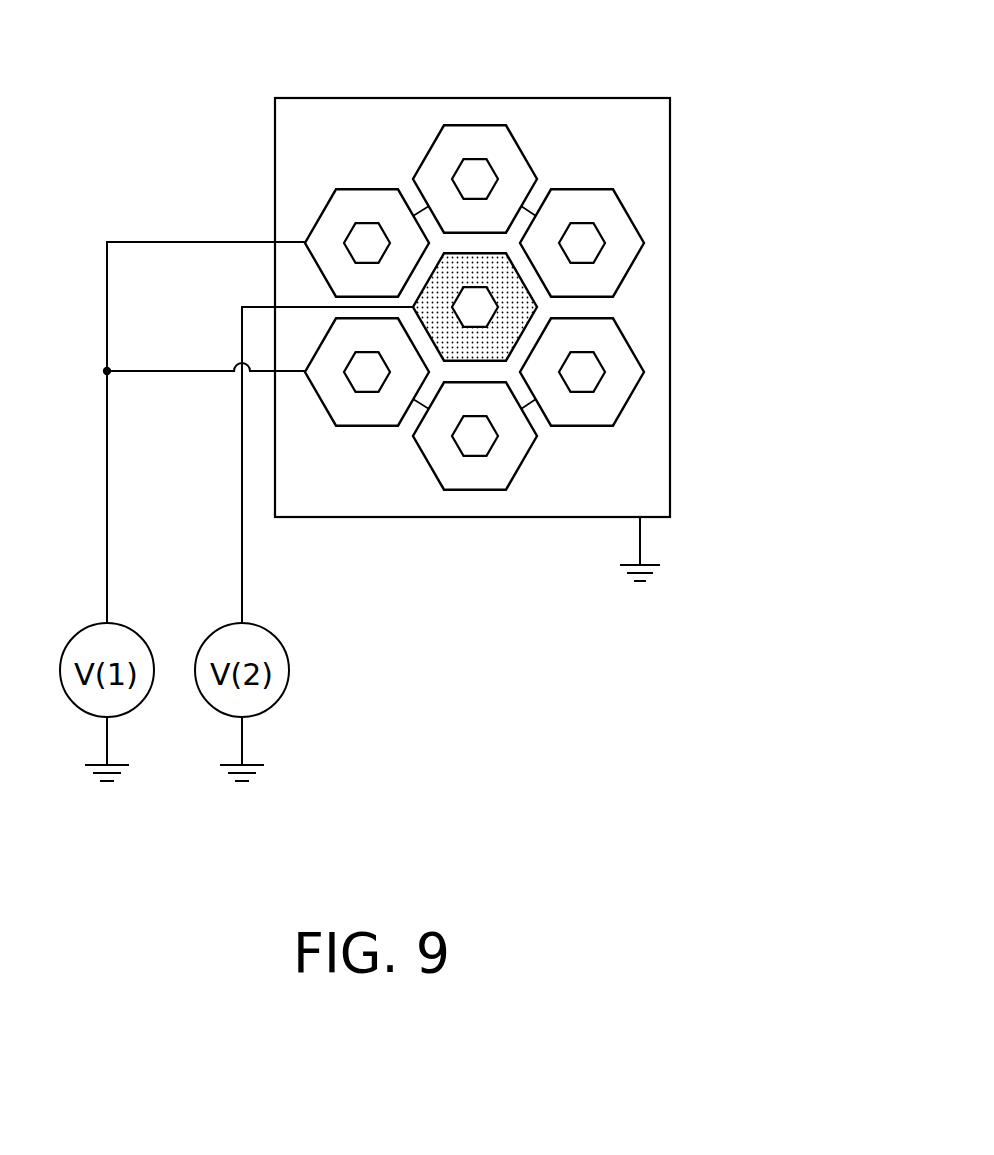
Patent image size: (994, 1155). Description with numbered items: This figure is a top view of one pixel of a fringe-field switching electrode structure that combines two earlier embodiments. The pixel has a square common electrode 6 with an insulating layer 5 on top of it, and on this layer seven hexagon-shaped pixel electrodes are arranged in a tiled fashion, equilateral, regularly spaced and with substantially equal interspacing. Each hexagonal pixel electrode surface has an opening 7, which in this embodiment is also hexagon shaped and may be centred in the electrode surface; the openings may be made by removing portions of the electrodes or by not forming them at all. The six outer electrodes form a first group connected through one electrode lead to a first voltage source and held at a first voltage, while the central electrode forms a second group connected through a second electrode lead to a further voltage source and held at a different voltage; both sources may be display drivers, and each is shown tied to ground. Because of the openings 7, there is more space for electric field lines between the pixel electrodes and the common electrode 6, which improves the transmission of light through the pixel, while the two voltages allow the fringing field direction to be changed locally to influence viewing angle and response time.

The insulating layer 5 is at (472, 272).
The common electrode 6 is at (640, 117).
The opening 7 is at (588, 242).